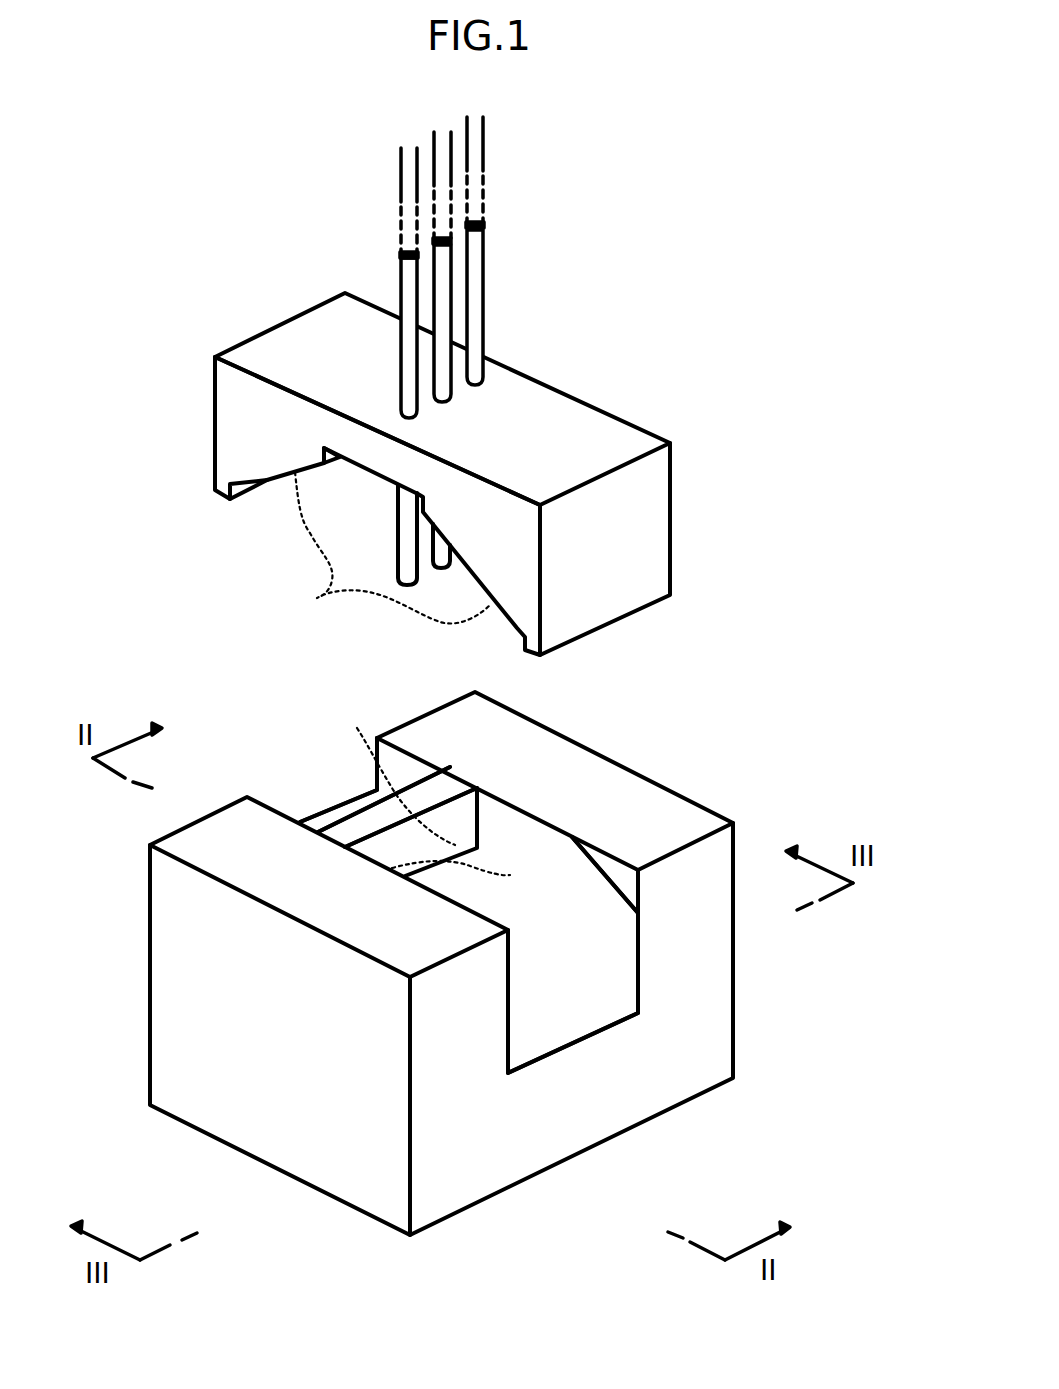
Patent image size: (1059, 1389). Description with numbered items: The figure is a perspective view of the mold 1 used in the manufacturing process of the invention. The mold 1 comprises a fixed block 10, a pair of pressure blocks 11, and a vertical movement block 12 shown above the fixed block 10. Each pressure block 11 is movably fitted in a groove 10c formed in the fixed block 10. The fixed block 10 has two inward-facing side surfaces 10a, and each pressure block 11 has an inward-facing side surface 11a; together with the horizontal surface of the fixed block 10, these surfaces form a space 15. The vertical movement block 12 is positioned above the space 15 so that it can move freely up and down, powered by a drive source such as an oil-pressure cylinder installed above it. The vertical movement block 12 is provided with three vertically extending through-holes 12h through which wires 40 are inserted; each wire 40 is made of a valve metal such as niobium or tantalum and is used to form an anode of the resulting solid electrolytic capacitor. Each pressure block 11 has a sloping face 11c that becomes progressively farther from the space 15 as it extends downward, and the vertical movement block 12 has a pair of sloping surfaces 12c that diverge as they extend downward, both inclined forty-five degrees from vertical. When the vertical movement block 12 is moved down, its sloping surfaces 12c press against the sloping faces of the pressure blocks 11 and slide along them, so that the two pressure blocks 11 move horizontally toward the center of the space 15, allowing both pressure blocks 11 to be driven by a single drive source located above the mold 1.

The mold 1 is at (686, 264).
The wire 40 is at (479, 252).
The vertical movement block 12 is at (648, 521).
The through-holes 12h is at (417, 418).
The sloping surfaces 12c is at (382, 557).
The fixed block 10 is at (290, 1140).
The inward-facing side surfaces 10a is at (502, 816).
The groove 10c is at (543, 1058).
The pressure blocks 11 is at (313, 807).
The inward-facing side surface 11a is at (377, 786).
The sloping face 11c is at (340, 828).
The space 15 is at (466, 818).